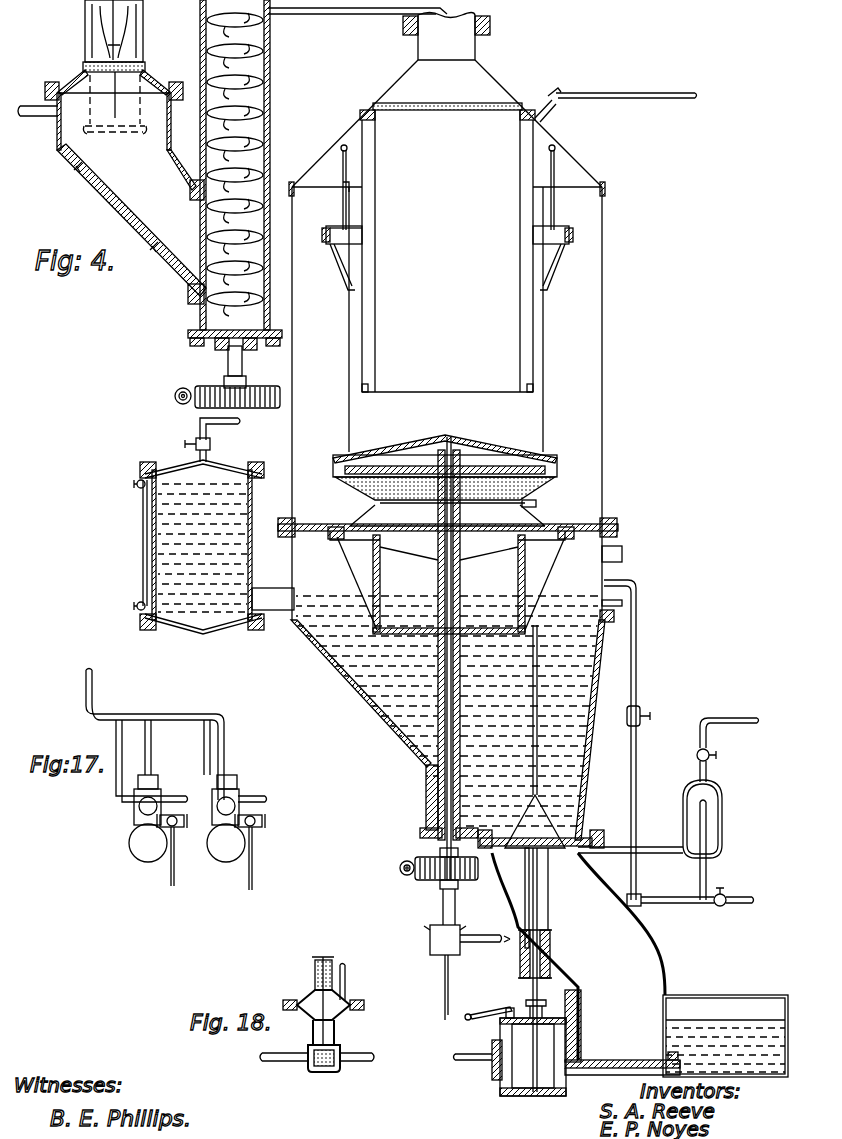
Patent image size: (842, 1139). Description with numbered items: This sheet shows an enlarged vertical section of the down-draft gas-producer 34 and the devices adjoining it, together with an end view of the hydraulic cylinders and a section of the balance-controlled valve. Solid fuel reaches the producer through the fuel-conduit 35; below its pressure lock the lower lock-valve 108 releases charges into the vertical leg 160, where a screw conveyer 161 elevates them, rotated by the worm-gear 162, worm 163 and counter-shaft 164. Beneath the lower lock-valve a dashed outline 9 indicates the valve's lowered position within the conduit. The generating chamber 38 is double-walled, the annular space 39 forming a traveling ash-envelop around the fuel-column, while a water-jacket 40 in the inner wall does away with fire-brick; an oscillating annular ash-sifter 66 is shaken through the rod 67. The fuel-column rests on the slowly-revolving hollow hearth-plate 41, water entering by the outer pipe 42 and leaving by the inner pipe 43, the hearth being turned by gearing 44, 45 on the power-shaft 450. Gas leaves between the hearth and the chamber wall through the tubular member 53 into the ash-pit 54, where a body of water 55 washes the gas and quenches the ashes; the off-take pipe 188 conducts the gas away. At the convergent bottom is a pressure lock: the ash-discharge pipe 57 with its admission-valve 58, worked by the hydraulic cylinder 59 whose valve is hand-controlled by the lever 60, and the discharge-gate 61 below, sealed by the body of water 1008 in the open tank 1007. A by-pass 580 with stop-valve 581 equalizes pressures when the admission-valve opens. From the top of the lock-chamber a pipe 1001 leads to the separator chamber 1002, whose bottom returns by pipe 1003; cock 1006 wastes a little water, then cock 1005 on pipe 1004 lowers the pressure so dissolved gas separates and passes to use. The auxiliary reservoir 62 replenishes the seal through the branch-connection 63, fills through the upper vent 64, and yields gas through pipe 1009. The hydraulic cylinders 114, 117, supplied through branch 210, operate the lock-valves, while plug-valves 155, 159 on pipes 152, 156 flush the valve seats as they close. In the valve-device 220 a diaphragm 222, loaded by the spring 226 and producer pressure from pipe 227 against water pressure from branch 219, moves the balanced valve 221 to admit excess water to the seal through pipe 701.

In FIG. 4, the lower lock-valve 108 is at (86, 72).
In FIG. 4, the cylinder 9 is at (114, 103).
In FIG. 4, the fuel-conduit 35 is at (128, 204).
In FIG. 4, the vertical leg 160 is at (270, 74).
In FIG. 4, the screw conveyer 161 is at (270, 110).
In FIG. 4, the worm-gear 162 is at (272, 410).
In FIG. 4, the worm 163 is at (173, 396).
In FIG. 4, the counter-shaft 164 is at (180, 388).
In FIG. 4, the pipe 1009 is at (198, 424).
In FIG. 4, the upper vent 64 is at (213, 447).
In FIG. 4, the auxiliary reservoir 62 is at (160, 531).
In FIG. 4, the discharge-and-vent branch-connection 63 is at (274, 612).
In FIG. 4, the down-draft gas-producer 34 is at (447, 203).
In FIG. 4, the annular space 39 is at (358, 328).
In FIG. 4, the generating chamber 38 is at (348, 364).
In FIG. 4, the water-jacket 40 is at (372, 294).
In FIG. 4, the hearth-plate 41 is at (470, 450).
In FIG. 4, the rod 67 is at (538, 505).
In FIG. 4, the annular ash-sifter 66 is at (538, 538).
In FIG. 4, the tubular member 53 is at (366, 566).
In FIG. 4, the outer pipe 42 is at (462, 605).
In FIG. 4, the inner pipe 43 is at (444, 585).
In FIG. 4, the body of water 55 is at (380, 677).
In FIG. 4, the ash-pit 54 is at (585, 764).
In FIG. 4, the admission-valve 58 is at (560, 812).
In FIG. 4, the gearing 44 is at (420, 880).
In FIG. 4, the gearing 45 is at (399, 868).
In FIG. 4, the power-shaft 450 is at (404, 862).
In FIG. 4, the off-take pipe 188 is at (638, 553).
In FIG. 4, the by-pass 580 is at (640, 632).
In FIG. 4, the stop-valve 581 is at (643, 706).
In FIG. 4, the pipe 1004 is at (722, 720).
In FIG. 4, the cock 1005 is at (698, 754).
In FIG. 4, the separator chamber 1002 is at (720, 820).
In FIG. 4, the pipe 1001 is at (660, 847).
In FIG. 4, the pipe 1003 is at (664, 897).
In FIG. 4, the cock 1006 is at (726, 896).
In FIG. 4, the ash-discharge pipe 57 is at (650, 946).
In FIG. 4, the tank 1007 is at (762, 995).
In FIG. 4, the body of water 1008 is at (695, 1030).
In FIG. 4, the discharge-gate 61 is at (605, 1058).
In FIG. 4, the hydraulic cylinder 59 is at (510, 1069).
In FIG. 4, the lever 60 is at (482, 1010).
In FIG. 17, the branch 210 is at (95, 684).
In FIG. 17, the hydraulic cylinder 117 is at (128, 843).
In FIG. 17, the plug-valve 159 is at (168, 812).
In FIG. 17, the pipe 156 is at (170, 877).
In FIG. 17, the hydraulic cylinder 114 is at (244, 848).
In FIG. 17, the plug-valve 155 is at (252, 814).
In FIG. 17, the pipe 152 is at (255, 874).
In FIG. 18, the spring 226 is at (318, 972).
In FIG. 18, the diaphragm 222 is at (305, 998).
In FIG. 18, the pipe 227 is at (346, 972).
In FIG. 18, the valve-device 220 is at (323, 1036).
In FIG. 18, the balanced valve 221 is at (340, 1056).
In FIG. 18, the branch 219 is at (282, 1058).
In FIG. 18, the pipe 701 is at (358, 1060).